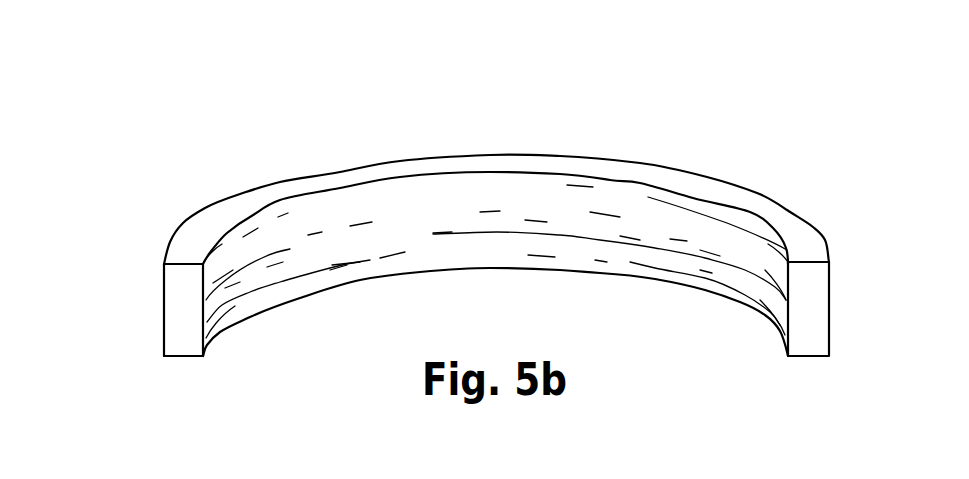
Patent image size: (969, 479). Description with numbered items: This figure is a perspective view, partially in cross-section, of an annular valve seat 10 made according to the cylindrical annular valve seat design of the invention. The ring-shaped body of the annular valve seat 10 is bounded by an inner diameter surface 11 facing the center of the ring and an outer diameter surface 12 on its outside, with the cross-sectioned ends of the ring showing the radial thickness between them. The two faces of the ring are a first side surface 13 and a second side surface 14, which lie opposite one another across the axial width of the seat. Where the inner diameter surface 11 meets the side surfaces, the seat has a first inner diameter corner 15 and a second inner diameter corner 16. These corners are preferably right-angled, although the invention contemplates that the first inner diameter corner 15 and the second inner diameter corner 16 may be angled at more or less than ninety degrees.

The annular valve seat 10 is at (165, 138).
The inner diameter surface 11 is at (470, 210).
The outer diameter surface 12 is at (163, 280).
The first side surface 13 is at (182, 358).
The second side surface 14 is at (577, 167).
The first inner diameter corner 15 is at (204, 356).
The second inner diameter corner 16 is at (206, 260).